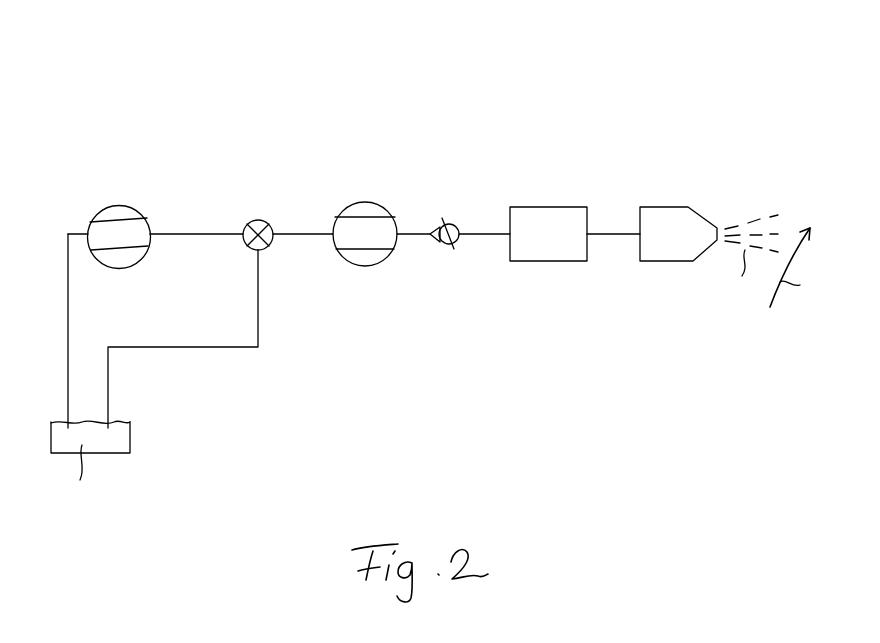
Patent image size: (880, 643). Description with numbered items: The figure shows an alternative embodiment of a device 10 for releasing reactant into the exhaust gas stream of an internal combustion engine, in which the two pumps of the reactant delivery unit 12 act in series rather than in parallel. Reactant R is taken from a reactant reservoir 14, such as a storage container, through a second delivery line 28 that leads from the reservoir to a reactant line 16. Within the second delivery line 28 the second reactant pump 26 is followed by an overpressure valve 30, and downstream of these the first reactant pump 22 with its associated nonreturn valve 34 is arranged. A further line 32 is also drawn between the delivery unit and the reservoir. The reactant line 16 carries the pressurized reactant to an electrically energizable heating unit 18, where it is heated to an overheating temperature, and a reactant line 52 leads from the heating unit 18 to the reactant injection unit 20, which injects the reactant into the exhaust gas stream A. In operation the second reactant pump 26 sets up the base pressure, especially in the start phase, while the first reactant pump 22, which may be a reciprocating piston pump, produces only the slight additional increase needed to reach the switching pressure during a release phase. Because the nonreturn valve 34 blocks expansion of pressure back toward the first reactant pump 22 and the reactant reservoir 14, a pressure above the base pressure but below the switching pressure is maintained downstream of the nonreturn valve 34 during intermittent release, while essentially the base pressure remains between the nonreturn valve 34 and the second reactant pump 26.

The device for releasing reactant 10 is at (536, 340).
The reactant delivery unit 12 is at (263, 137).
The reactant reservoir 14 is at (130, 440).
The reactant line 16 is at (486, 237).
The heating unit 18 is at (548, 198).
The reactant injection unit 20 is at (675, 207).
The first reactant pump 22 is at (375, 198).
The second reactant pump 26 is at (125, 202).
The second delivery line 28 is at (72, 297).
The overpressure valve 30 is at (263, 214).
The return line 32 is at (262, 318).
The nonreturn valve 34 is at (445, 218).
The reactant line 52 is at (608, 237).